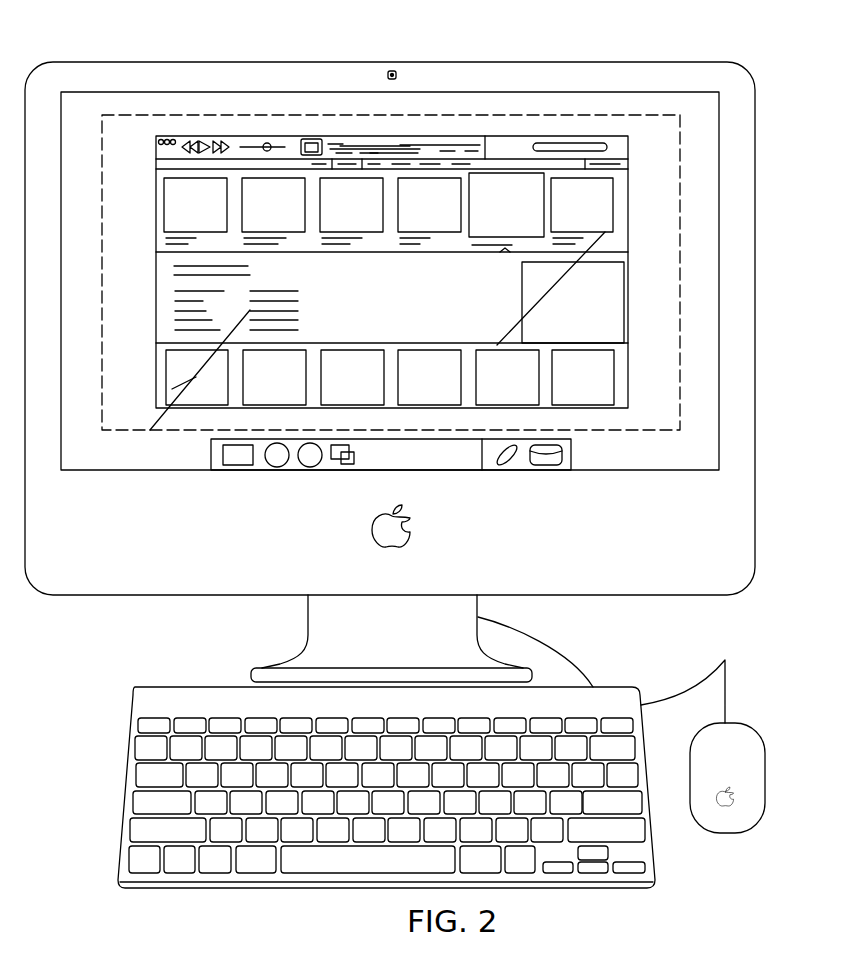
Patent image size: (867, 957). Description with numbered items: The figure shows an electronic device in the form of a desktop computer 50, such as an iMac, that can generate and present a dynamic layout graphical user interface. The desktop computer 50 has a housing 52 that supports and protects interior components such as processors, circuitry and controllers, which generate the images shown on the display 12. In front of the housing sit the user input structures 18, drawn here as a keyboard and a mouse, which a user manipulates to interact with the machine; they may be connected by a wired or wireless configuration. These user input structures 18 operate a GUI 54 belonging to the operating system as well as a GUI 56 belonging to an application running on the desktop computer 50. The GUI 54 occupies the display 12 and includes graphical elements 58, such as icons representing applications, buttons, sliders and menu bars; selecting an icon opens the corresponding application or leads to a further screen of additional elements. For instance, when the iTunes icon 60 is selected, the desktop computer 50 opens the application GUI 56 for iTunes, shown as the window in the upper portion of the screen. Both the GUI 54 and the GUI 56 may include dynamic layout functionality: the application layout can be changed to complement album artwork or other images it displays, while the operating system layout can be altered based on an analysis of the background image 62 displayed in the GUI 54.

The desktop computer 50 is at (130, 31).
The housing 52 is at (484, 62).
The display 12 is at (569, 92).
The background image 62 is at (244, 115).
The application GUI 56 is at (626, 140).
The operating system GUI 54 is at (95, 445).
The iTunes icon 60 is at (230, 470).
The graphical elements 58 is at (245, 470).
The user input structures 18 is at (156, 688).